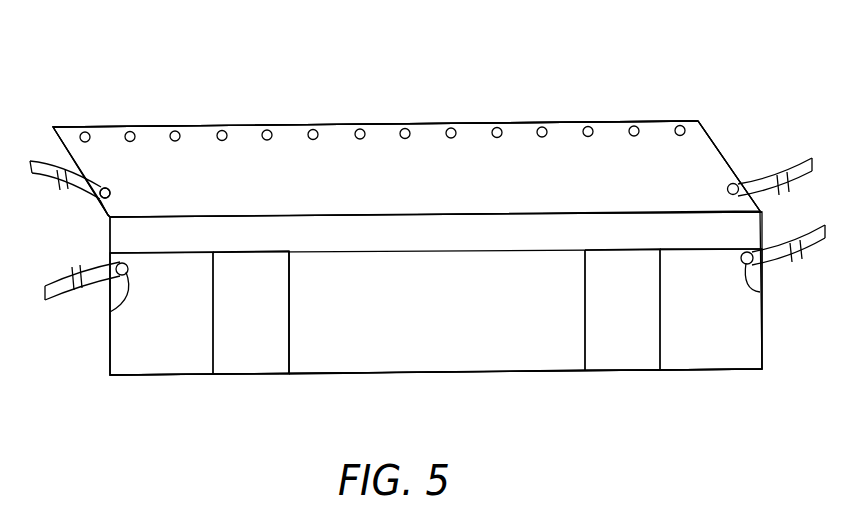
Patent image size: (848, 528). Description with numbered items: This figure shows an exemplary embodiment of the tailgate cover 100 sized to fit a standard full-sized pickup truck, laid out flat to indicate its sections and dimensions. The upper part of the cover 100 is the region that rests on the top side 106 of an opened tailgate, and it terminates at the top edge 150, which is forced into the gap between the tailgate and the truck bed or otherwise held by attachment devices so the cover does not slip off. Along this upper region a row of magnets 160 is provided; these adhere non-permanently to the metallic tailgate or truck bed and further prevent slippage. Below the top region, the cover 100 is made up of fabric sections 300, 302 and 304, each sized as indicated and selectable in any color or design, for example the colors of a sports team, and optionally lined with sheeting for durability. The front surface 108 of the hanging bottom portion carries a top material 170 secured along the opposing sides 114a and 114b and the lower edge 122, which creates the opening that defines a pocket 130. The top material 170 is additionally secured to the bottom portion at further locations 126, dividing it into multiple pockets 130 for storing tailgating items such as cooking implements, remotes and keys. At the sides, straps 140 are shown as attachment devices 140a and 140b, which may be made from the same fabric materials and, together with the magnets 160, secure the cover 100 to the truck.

The tailgate cover 100 is at (368, 64).
The top side 106 is at (575, 143).
The front surface 108 is at (100, 207).
The side 114a is at (103, 214).
The side 114b is at (730, 163).
The lower edge 122 is at (497, 373).
The additional locations 126 is at (213, 350).
The pocket 130 is at (183, 328).
The strap 140 is at (43, 166).
The strap 140a is at (110, 190).
The strap 140b is at (110, 312).
The top edge 150 is at (607, 121).
The magnets 160 is at (84, 131).
The top material 170 is at (395, 352).
The fabric section 300 is at (435, 330).
The fabric section 302 is at (435, 245).
The fabric section 304 is at (445, 191).